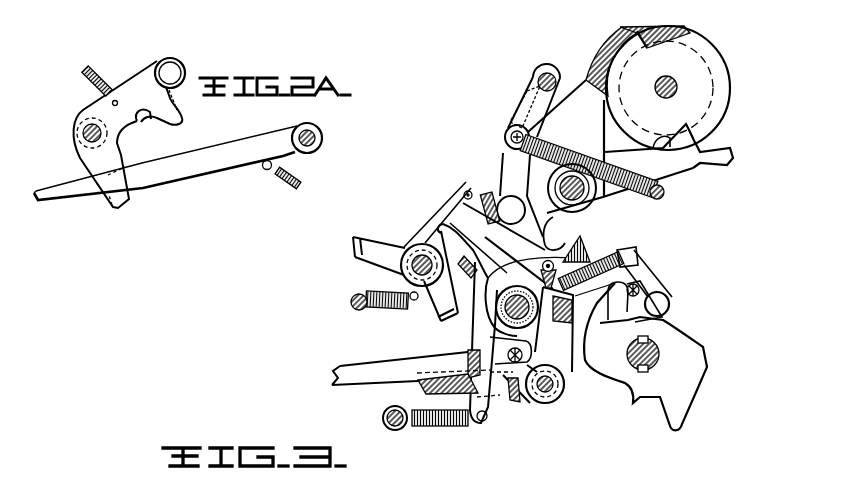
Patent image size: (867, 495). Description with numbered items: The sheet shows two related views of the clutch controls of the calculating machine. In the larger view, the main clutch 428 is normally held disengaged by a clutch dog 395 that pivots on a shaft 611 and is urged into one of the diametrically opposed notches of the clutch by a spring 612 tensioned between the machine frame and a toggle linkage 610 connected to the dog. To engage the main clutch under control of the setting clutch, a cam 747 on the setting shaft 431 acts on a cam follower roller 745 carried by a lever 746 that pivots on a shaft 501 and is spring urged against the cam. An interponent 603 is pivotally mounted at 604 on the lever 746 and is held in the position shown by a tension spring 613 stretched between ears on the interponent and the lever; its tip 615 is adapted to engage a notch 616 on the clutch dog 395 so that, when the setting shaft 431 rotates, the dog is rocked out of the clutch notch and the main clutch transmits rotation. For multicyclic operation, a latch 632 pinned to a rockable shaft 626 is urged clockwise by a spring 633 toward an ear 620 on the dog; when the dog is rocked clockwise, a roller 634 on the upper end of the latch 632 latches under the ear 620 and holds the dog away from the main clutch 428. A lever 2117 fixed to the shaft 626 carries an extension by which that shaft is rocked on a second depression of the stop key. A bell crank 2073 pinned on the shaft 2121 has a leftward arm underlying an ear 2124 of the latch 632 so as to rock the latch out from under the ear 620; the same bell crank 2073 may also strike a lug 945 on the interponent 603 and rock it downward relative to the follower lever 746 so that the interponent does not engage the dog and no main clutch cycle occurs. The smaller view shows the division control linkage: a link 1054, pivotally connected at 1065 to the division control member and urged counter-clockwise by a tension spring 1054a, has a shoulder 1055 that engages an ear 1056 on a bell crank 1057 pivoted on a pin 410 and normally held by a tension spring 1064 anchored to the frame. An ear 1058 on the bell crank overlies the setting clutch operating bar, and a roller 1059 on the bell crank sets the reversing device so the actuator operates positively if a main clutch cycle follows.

In FIG. 2A, the pin 410 is at (77, 132).
In FIG. 2A, the link 1054 is at (252, 139).
In FIG. 2A, the tension spring 1054a is at (297, 183).
In FIG. 2A, the shoulder 1055 is at (108, 194).
In FIG. 2A, the ear 1056 is at (123, 205).
In FIG. 2A, the bell crank 1057 is at (137, 128).
In FIG. 2A, the ear 1058 is at (182, 120).
In FIG. 2A, the roller 1059 is at (172, 67).
In FIG. 2A, the tension spring 1064 is at (115, 99).
In FIG. 2A, the pivotal connection 1065 is at (317, 133).
In FIG. 3, the main clutch 428 is at (652, 111).
In FIG. 3, the clutch dog 395 is at (660, 168).
In FIG. 3, the spring 612 is at (506, 141).
In FIG. 3, the toggle linkage 610 is at (503, 163).
In FIG. 3, the shaft 611 is at (589, 202).
In FIG. 3, the ear 620 is at (473, 215).
In FIG. 3, the roller 634 is at (469, 190).
In FIG. 3, the latch 632 is at (457, 195).
In FIG. 3, the lever 2117 is at (428, 238).
In FIG. 3, the rockable shaft 626 is at (403, 277).
In FIG. 3, the ear 2124 is at (441, 329).
In FIG. 3, the spring 633 is at (383, 308).
In FIG. 3, the shaft 501 is at (505, 311).
In FIG. 3, the bell crank 2073 is at (511, 404).
In FIG. 3, the shaft 2121 is at (564, 400).
In FIG. 3, the interponent 603 is at (580, 255).
In FIG. 3, the tension spring 613 is at (640, 259).
In FIG. 3, the cam follower roller 745 is at (670, 300).
In FIG. 3, the lever 746 is at (641, 285).
In FIG. 3, the pivot 604 is at (664, 297).
In FIG. 3, the lug 945 is at (618, 316).
In FIG. 3, the tip 615 is at (566, 238).
In FIG. 3, the notch 616 is at (547, 261).
In FIG. 3, the cam 747 is at (683, 412).
In FIG. 3, the setting shaft 431 is at (635, 375).